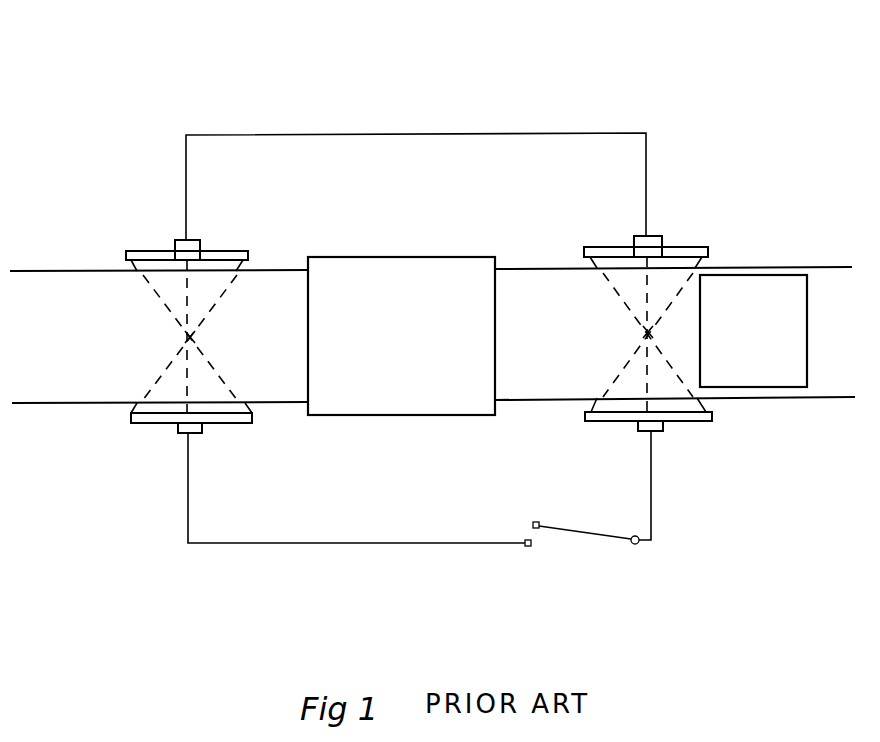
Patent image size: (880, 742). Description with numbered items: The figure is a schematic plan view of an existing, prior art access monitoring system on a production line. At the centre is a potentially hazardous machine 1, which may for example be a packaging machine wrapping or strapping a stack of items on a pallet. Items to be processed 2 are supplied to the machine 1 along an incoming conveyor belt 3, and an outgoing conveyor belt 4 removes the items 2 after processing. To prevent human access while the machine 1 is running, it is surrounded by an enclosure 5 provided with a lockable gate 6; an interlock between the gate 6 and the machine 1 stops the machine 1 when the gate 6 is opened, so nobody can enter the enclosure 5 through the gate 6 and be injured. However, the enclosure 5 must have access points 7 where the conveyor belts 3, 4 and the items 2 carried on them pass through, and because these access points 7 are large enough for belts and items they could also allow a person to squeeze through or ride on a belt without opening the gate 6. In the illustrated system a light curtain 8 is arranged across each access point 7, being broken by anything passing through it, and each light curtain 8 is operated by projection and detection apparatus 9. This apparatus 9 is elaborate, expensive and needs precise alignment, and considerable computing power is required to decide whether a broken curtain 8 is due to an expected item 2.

The potentially hazardous machine 1 is at (430, 292).
The items to be processed 2 is at (770, 298).
The incoming conveyor belt 3 is at (840, 368).
The outgoing conveyor belt 4 is at (70, 300).
The enclosure 5 is at (277, 135).
The lockable gate 6 is at (570, 530).
The access points 7 is at (165, 345).
The light curtains 8 is at (610, 283).
The projection and detection apparatus 9 is at (143, 253).